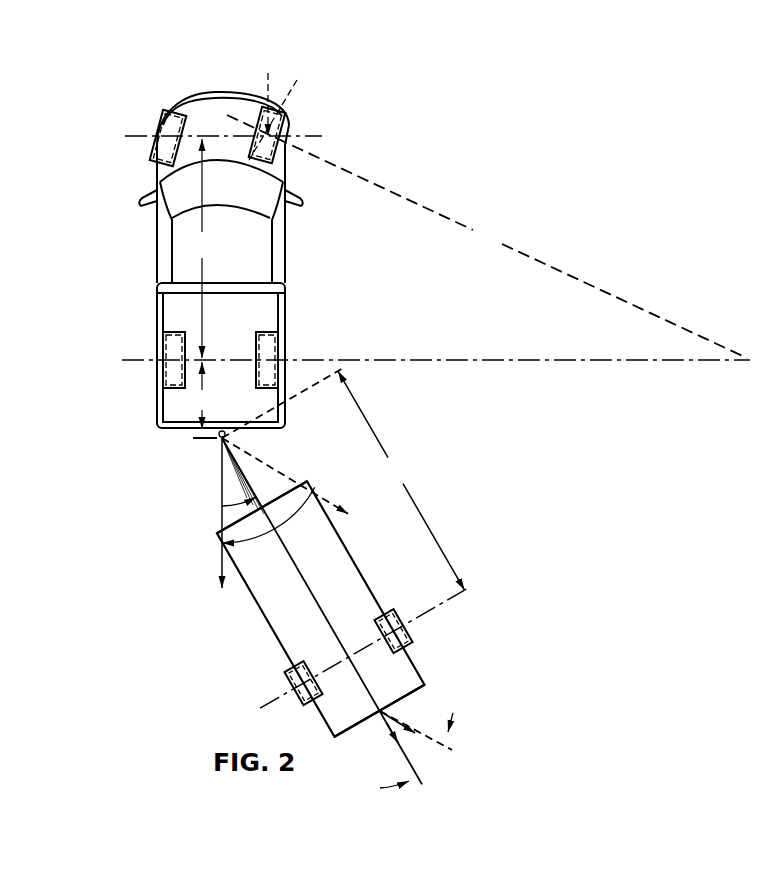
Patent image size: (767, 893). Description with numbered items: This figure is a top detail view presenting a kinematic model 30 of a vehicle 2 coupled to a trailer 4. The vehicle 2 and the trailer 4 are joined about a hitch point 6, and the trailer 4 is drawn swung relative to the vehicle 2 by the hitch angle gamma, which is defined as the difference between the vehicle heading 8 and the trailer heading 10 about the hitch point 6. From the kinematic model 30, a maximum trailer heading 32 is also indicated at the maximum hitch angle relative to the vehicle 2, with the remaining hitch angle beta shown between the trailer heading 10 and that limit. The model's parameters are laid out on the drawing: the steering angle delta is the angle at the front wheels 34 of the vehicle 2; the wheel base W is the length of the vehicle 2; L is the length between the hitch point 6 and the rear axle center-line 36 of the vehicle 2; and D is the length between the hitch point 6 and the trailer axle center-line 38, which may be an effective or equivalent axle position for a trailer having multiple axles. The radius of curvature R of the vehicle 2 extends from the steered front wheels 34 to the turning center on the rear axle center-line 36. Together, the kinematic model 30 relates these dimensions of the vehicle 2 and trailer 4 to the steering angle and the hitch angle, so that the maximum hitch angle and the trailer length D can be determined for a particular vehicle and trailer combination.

The vehicle 2 is at (151, 106).
The trailer 4 is at (316, 476).
The hitch point 6 is at (212, 441).
The vehicle heading 8 is at (216, 531).
The trailer heading 10 is at (367, 708).
The kinematic model 30 is at (381, 121).
The maximum trailer heading 32 is at (403, 723).
The front wheels 34 is at (157, 117).
The rear axle center-line 36 is at (311, 357).
The trailer axle center-line 38 is at (421, 619).